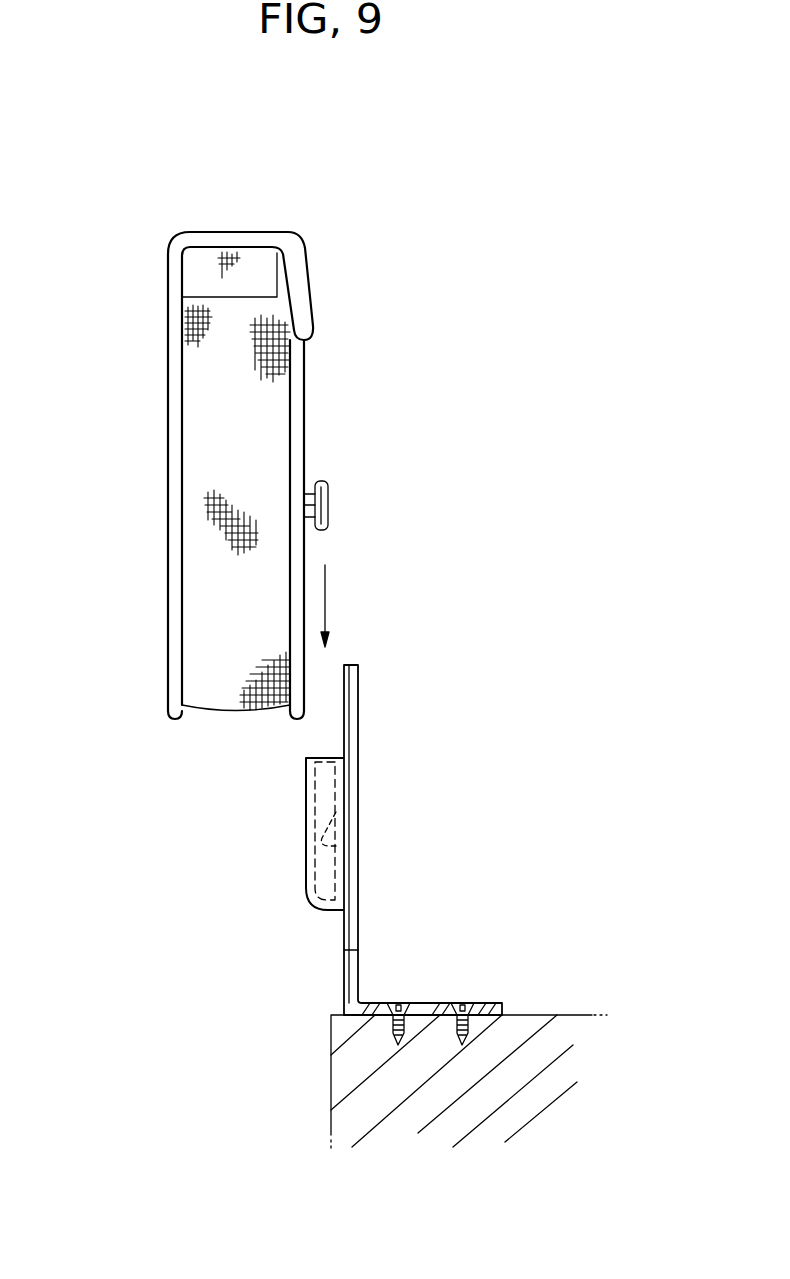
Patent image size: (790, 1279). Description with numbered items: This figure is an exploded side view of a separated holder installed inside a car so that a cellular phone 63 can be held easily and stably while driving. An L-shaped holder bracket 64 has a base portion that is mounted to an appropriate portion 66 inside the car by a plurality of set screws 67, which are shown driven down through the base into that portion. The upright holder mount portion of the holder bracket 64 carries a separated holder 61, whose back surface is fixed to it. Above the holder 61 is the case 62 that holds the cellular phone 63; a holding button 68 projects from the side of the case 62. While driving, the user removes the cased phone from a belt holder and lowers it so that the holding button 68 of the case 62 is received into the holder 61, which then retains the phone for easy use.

The separated holder 61 is at (305, 840).
The case 62 is at (168, 483).
The cellular phone 63 is at (245, 278).
The L-shaped holder bracket 64 is at (345, 975).
The appropriate portion inside a car 66 is at (537, 1053).
The set screws 67 is at (468, 1003).
The holding button 68 is at (329, 503).